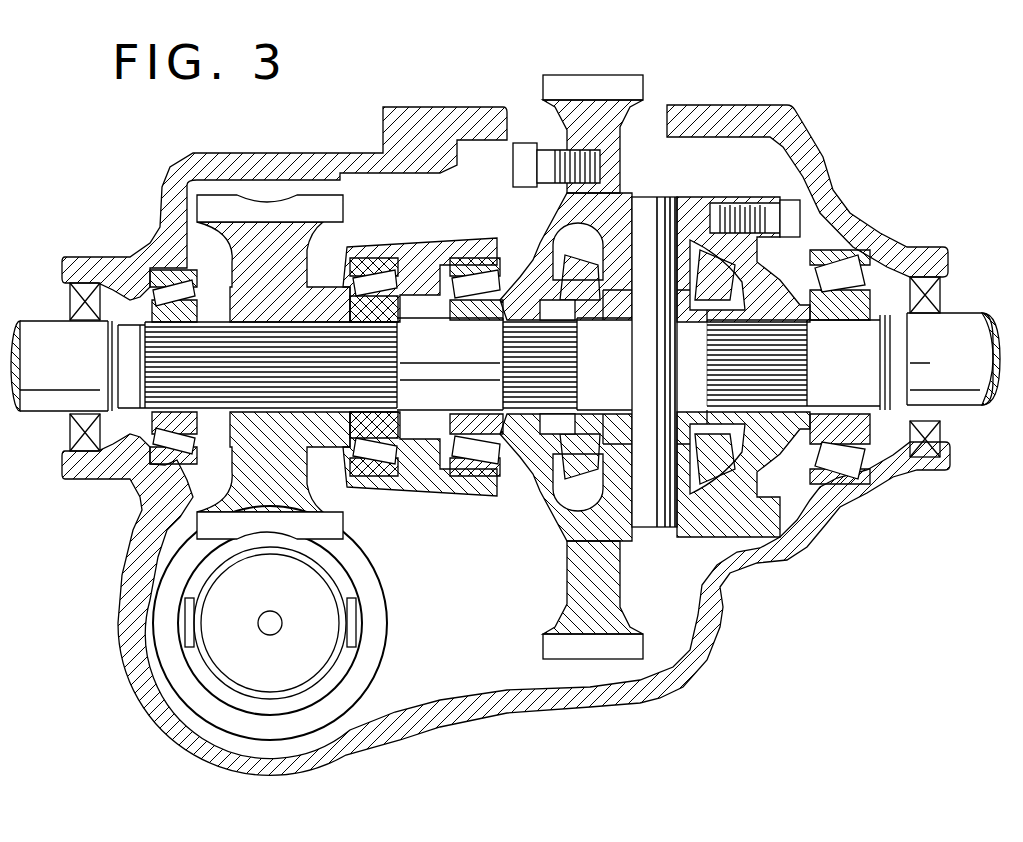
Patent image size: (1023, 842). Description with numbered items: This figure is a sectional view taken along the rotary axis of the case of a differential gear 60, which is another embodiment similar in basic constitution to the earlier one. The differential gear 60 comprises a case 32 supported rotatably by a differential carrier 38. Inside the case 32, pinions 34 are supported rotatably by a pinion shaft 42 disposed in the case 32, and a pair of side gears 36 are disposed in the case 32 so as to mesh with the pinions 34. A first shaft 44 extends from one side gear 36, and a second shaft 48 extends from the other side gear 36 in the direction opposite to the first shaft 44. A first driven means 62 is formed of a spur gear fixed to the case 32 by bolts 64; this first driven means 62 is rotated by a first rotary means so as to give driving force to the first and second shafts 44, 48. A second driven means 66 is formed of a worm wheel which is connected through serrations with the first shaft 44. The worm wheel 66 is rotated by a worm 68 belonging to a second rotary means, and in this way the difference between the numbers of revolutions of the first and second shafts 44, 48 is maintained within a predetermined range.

The differential gear 60 is at (485, 97).
The bolts 64 is at (522, 142).
The first driven means 62 is at (620, 128).
The case 32 is at (533, 243).
The pinions 34 is at (622, 208).
The pinion shaft 42 is at (660, 200).
The side gears 36 is at (570, 443).
The second driven means 66 is at (340, 492).
The first shaft 44 is at (116, 440).
The second shaft 48 is at (960, 393).
The worm 68 is at (177, 673).
The differential carrier 38 is at (498, 705).